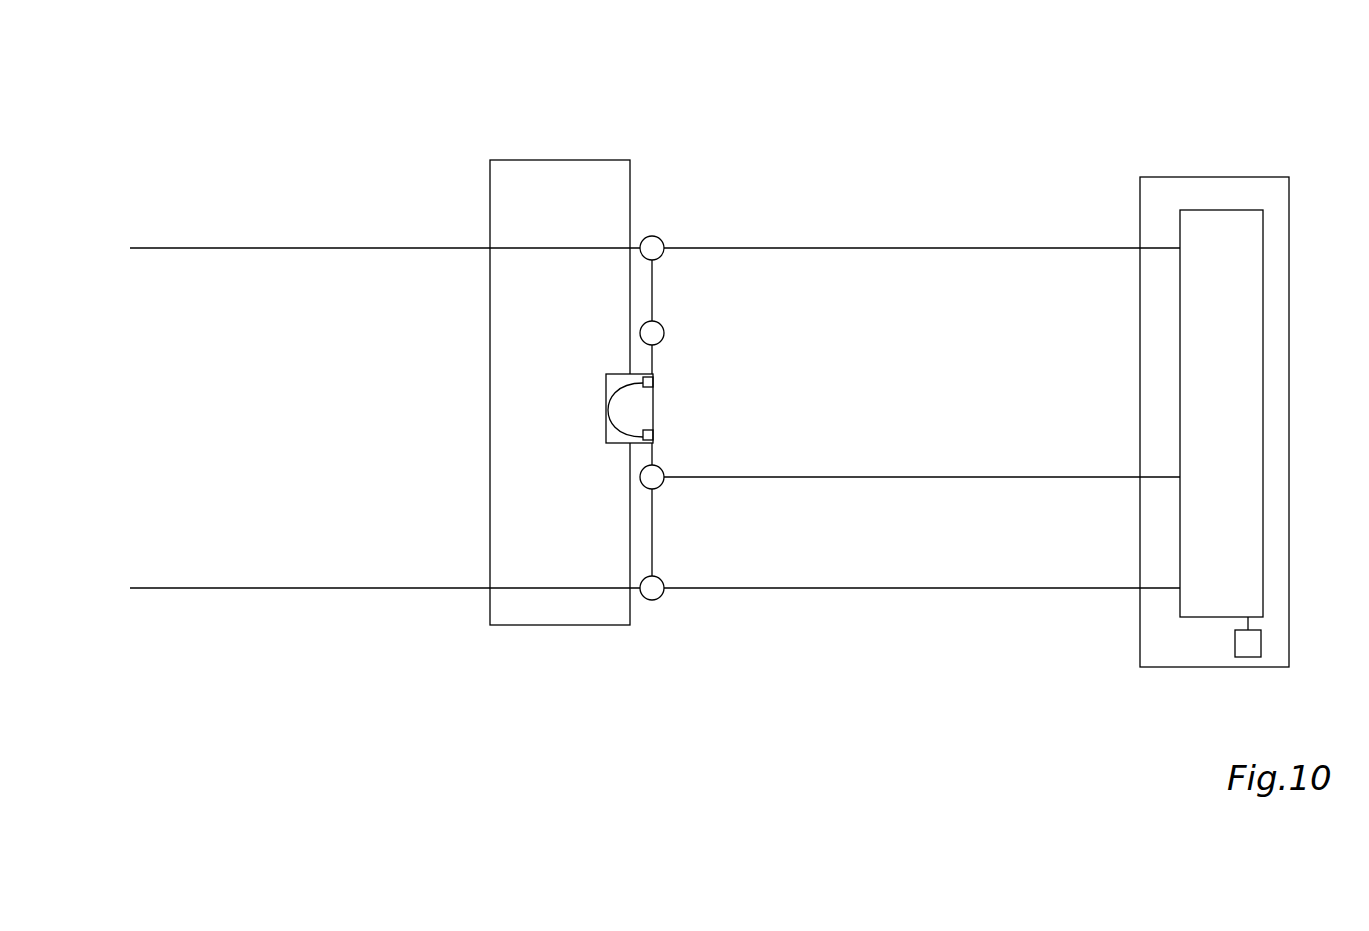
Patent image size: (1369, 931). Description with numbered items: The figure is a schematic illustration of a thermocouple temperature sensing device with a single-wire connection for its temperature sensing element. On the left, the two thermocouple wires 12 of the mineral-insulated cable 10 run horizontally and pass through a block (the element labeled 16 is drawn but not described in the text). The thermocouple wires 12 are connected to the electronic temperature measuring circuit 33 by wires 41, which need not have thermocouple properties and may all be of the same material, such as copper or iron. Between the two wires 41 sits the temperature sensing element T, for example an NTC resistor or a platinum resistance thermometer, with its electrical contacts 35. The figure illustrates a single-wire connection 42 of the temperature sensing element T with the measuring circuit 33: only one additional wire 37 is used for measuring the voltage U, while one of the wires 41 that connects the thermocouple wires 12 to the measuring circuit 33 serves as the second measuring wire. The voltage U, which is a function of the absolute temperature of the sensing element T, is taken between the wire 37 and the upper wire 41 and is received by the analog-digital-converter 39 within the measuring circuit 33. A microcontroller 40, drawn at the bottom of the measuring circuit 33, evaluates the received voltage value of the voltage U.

The mineral-insulated cable 10 is at (385, 157).
The thermocouple wires 12 is at (380, 249).
The measuring device 16 is at (572, 160).
The electronic temperature measuring circuit 33 is at (1177, 177).
The electrical contacts 35 is at (606, 410).
The wire 37 is at (863, 478).
The analog-digital-converter 39 is at (1247, 210).
The microcontroller 40 is at (1248, 657).
The wires 41 is at (822, 247).
The 1-wire connection 42 is at (760, 362).
The temperature sensing element T is at (656, 412).
The electric voltage U is at (1120, 257).